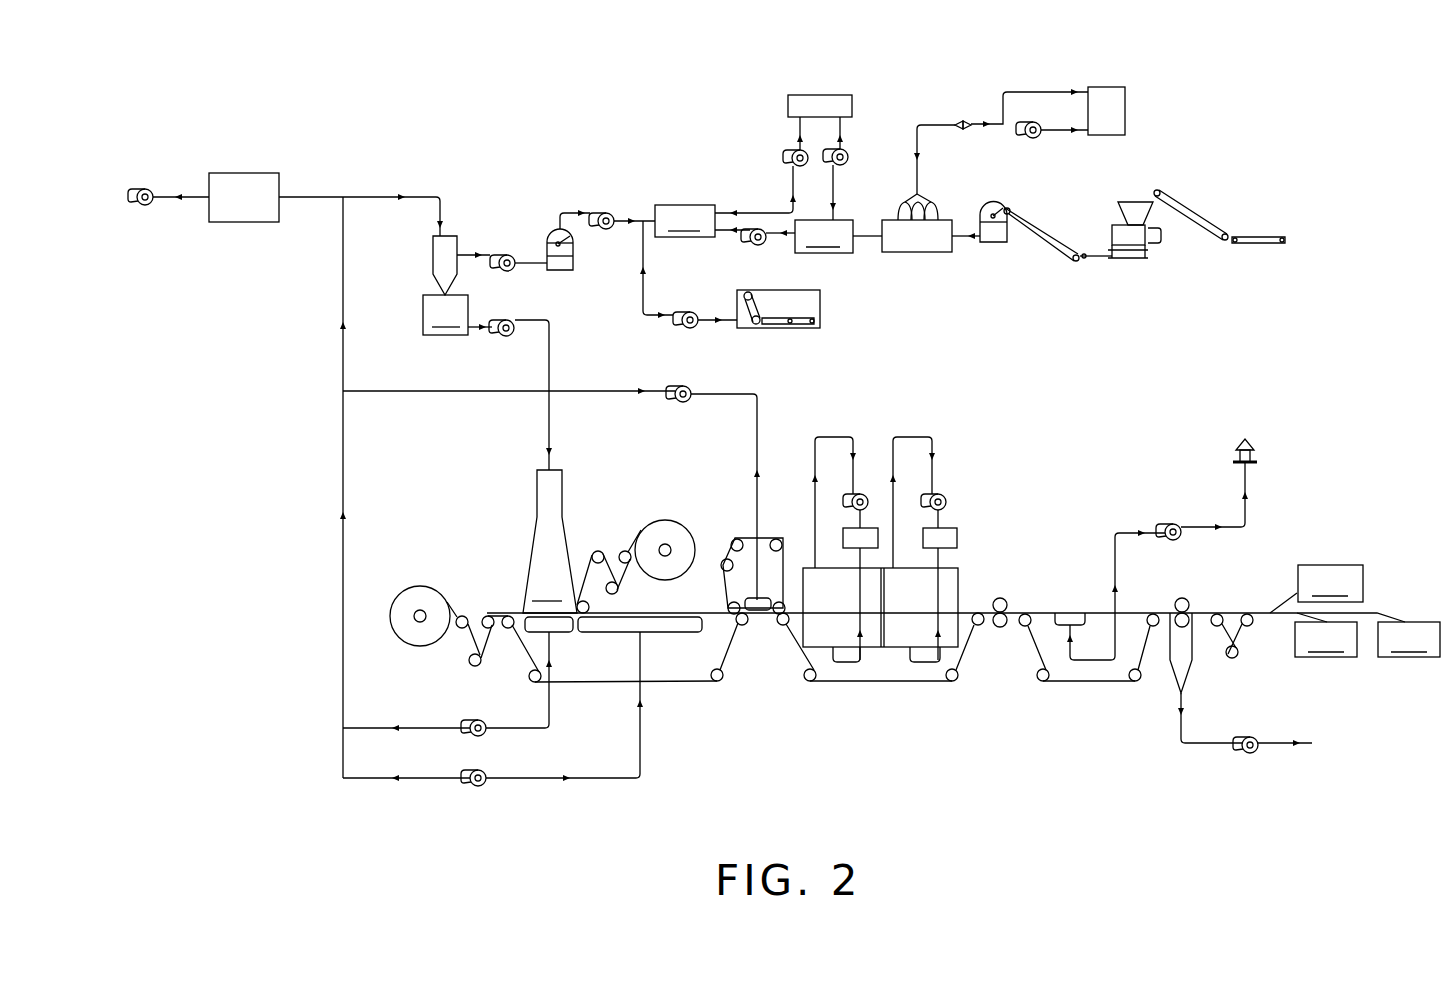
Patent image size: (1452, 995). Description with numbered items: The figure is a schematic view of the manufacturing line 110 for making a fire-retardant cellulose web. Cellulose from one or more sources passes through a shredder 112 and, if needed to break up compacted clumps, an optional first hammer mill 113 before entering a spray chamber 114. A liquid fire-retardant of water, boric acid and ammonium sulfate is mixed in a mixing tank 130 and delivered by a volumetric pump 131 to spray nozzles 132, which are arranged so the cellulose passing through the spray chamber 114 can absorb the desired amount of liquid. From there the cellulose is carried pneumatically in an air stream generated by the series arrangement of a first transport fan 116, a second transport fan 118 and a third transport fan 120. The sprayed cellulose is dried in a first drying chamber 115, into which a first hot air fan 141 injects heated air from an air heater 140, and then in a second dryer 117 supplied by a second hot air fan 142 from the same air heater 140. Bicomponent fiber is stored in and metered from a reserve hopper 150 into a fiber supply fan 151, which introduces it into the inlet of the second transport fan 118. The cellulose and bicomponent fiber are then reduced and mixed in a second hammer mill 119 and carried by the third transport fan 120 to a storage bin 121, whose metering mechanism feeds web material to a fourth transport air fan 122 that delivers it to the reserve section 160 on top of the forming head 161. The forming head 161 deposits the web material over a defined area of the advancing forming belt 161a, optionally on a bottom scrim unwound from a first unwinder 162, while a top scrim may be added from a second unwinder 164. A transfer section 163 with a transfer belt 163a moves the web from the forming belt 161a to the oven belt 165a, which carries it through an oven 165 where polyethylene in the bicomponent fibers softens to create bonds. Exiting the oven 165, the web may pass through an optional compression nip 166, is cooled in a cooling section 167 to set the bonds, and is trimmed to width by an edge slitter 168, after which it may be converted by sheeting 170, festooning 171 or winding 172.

The manufacturing line 110 is at (1266, 66).
The shredder 112 is at (1145, 245).
The first hammer mill 113 is at (1007, 240).
The spray chamber 114 is at (925, 243).
The first drying chamber 115 is at (824, 236).
The first transport fan 116 is at (760, 245).
The second dryer 117 is at (685, 221).
The second transport fan 118 is at (605, 212).
The second hammer mill 119 is at (573, 262).
The third transport fan 120 is at (508, 252).
The storage bin 121 is at (445, 315).
The fourth transport air fan 122 is at (503, 336).
The mixing tank 130 is at (1125, 118).
The volumetric pump 131 is at (1030, 140).
The spray nozzles 132 is at (938, 204).
The air heater 140 is at (862, 88).
The first hot air fan 141 is at (850, 152).
The second hot air fan 142 is at (790, 157).
The reserve hopper 150 is at (820, 297).
The fiber supply fan 151 is at (690, 330).
The reserve section 160 is at (535, 445).
The forming head 161 is at (522, 617).
The forming belt 161a is at (675, 683).
The first unwinder 162 is at (421, 586).
The transfer section 163 is at (782, 515).
The transfer belt 163a is at (762, 618).
The second unwinder 164 is at (688, 530).
The oven 165 is at (905, 712).
The oven belt 165a is at (932, 682).
The compression nip 166 is at (1002, 587).
The cooling section 167 is at (1080, 700).
The edge slitter 168 is at (1184, 594).
The sheeting 170 is at (1326, 635).
The festooning 171 is at (1316, 589).
The winding 172 is at (1409, 639).